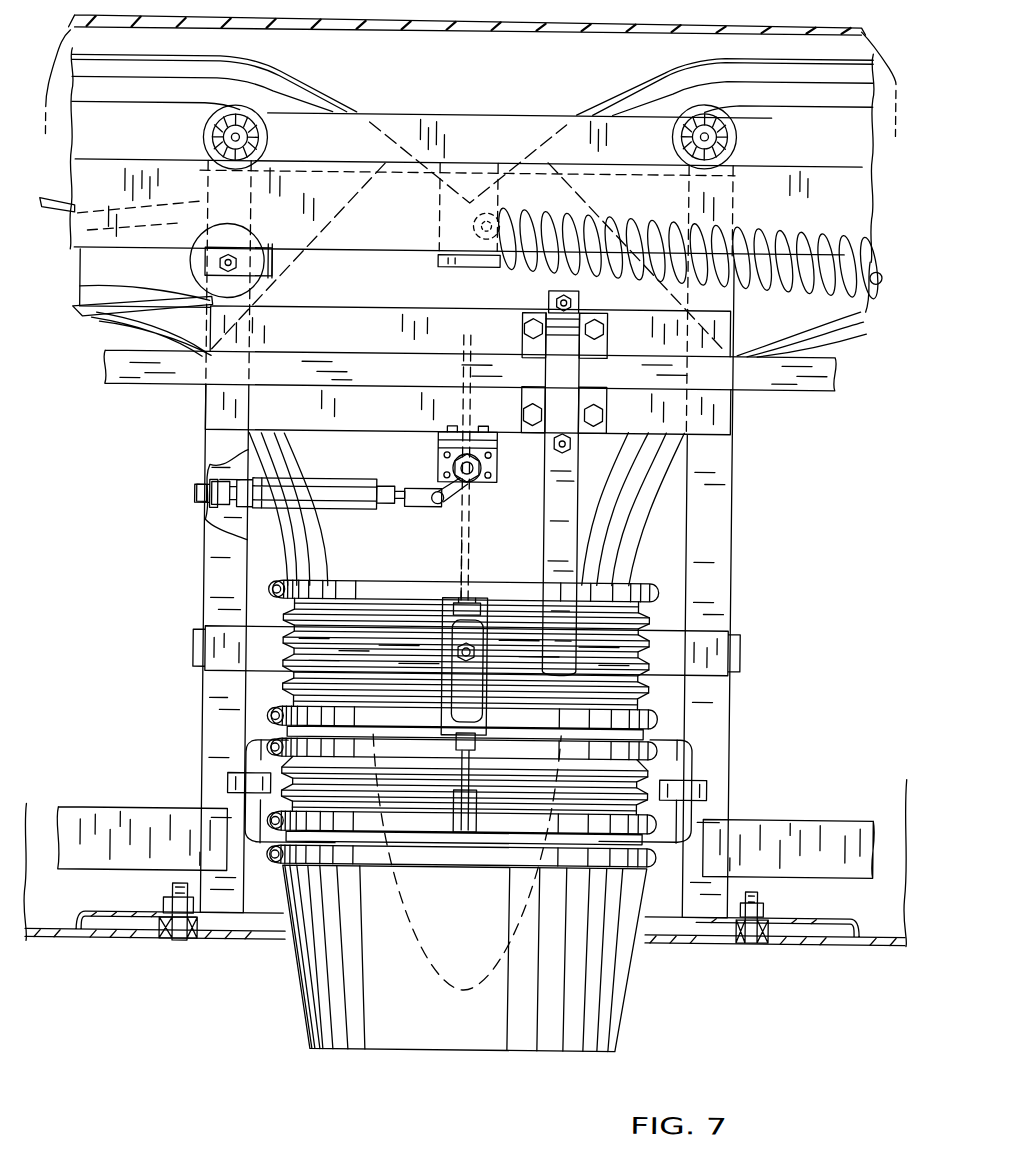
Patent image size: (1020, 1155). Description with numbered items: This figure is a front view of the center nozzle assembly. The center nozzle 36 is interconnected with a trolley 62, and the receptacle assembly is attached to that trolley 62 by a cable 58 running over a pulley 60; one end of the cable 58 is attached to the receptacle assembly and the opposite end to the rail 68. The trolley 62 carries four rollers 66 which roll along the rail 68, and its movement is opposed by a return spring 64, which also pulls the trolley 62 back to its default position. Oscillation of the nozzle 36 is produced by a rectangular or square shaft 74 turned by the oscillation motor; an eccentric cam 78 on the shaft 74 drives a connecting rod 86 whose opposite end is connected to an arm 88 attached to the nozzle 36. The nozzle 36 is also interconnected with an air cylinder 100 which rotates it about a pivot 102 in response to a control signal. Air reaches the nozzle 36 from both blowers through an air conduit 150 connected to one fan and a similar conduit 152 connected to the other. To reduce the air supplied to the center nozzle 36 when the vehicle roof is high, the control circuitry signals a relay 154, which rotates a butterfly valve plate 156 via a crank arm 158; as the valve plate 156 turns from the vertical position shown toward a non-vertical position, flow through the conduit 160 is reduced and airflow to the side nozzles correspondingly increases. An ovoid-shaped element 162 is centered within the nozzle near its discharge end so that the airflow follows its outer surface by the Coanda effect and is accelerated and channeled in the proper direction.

The center nozzle 36 is at (587, 1006).
The cable 58 is at (97, 322).
The pulley 60 is at (193, 261).
The trolley 62 is at (208, 552).
The return spring 64 is at (820, 357).
The rollers 66 is at (264, 134).
The rail 68 is at (117, 194).
The shaft 74 is at (821, 389).
The eccentric cam 78 is at (559, 343).
The connecting rod 86 is at (560, 508).
The arm 88 is at (499, 630).
The air cylinder 100 is at (643, 687).
The pivot 102 is at (685, 794).
The air conduit 150 is at (241, 62).
The conduit 152 is at (650, 67).
The relay 154 is at (317, 495).
The butterfly valve plate 156 is at (460, 546).
The crank arm 158 is at (416, 491).
The conduit 160 is at (642, 523).
The ovoid-shaped element 162 is at (452, 924).